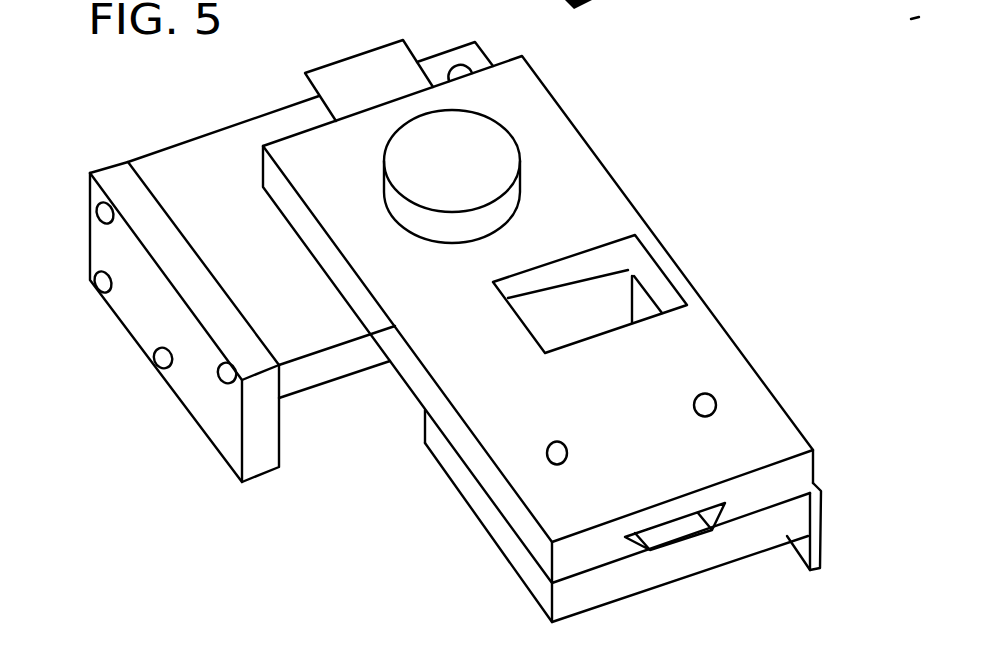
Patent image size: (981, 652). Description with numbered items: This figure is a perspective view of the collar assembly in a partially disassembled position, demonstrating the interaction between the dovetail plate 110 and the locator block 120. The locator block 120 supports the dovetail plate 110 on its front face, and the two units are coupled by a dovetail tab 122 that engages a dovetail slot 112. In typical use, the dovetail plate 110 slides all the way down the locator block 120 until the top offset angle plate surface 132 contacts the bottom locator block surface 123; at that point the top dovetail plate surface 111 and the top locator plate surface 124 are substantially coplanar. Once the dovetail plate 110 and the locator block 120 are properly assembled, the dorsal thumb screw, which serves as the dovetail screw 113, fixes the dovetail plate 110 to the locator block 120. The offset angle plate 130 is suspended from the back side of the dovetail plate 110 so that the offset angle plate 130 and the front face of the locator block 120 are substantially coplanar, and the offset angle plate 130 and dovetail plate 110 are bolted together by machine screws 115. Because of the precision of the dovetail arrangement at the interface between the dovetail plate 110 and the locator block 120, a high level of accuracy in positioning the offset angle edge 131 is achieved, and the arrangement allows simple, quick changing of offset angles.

The dovetail plate 110 is at (590, 190).
The top dovetail plate surface 111 is at (474, 74).
The dovetail slot 112 is at (555, 288).
The dovetail screw 113 is at (417, 172).
The machine screws 115 is at (693, 406).
The locator block 120 is at (200, 175).
The dovetail tab 122 is at (353, 72).
The bottom locator block surface 123 is at (300, 377).
The top locator plate surface 124 is at (238, 121).
The offset angle plate 130 is at (512, 543).
The offset angle edge 131 is at (823, 528).
The top offset angle plate surface 132 is at (422, 418).